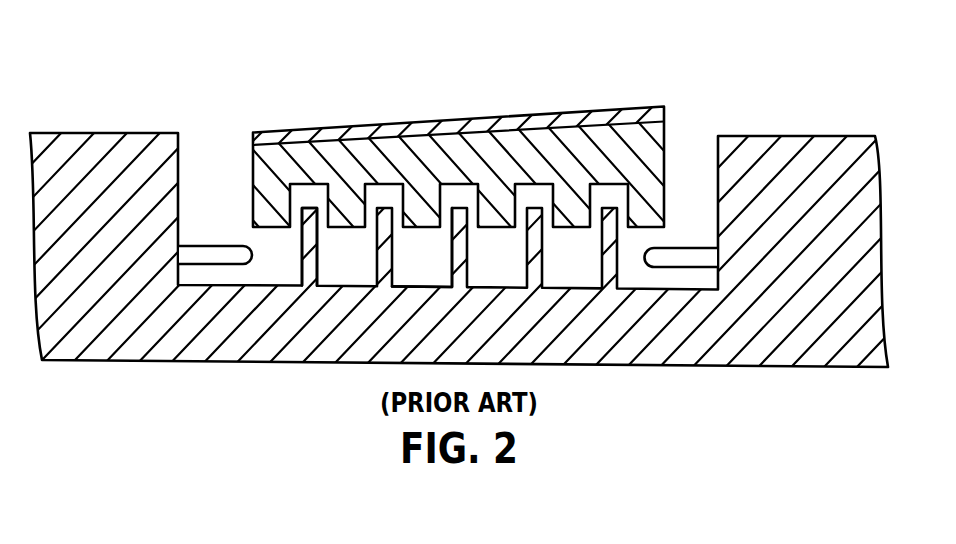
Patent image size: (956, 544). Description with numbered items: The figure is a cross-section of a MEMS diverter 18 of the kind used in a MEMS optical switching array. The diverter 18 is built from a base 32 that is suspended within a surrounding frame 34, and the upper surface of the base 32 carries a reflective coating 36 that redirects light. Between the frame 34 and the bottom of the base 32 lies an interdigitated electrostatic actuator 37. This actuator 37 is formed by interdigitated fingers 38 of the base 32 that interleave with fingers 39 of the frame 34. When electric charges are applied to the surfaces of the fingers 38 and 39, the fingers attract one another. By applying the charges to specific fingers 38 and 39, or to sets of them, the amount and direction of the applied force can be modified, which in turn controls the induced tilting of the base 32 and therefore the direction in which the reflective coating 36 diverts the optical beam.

The MEMS diverter 18 is at (429, 139).
The base 32 is at (258, 173).
The frame 34 is at (83, 138).
The reflective coating 36 is at (336, 126).
The interdigitated electrostatic actuator 37 is at (226, 230).
The fingers 38 is at (340, 227).
The fingers 39 is at (458, 273).